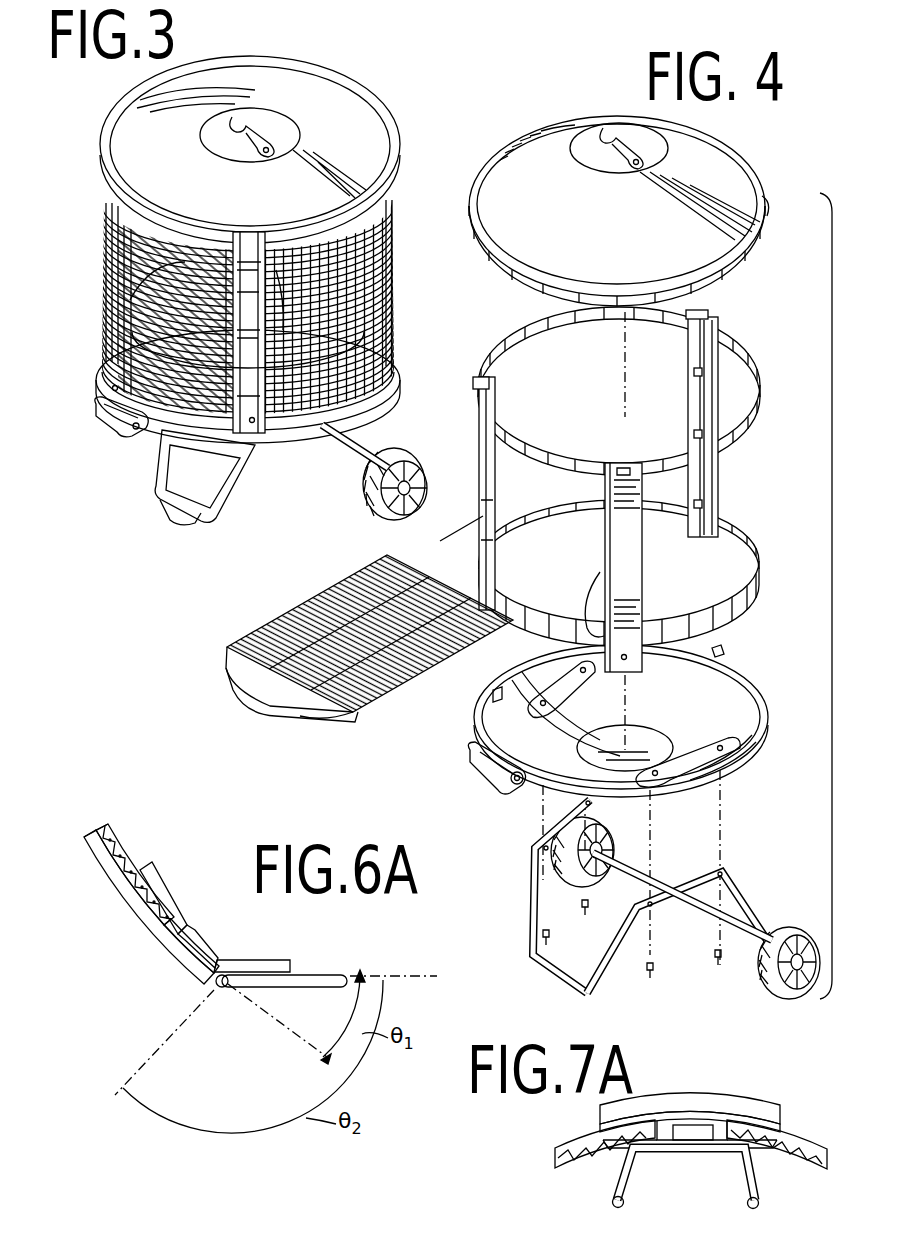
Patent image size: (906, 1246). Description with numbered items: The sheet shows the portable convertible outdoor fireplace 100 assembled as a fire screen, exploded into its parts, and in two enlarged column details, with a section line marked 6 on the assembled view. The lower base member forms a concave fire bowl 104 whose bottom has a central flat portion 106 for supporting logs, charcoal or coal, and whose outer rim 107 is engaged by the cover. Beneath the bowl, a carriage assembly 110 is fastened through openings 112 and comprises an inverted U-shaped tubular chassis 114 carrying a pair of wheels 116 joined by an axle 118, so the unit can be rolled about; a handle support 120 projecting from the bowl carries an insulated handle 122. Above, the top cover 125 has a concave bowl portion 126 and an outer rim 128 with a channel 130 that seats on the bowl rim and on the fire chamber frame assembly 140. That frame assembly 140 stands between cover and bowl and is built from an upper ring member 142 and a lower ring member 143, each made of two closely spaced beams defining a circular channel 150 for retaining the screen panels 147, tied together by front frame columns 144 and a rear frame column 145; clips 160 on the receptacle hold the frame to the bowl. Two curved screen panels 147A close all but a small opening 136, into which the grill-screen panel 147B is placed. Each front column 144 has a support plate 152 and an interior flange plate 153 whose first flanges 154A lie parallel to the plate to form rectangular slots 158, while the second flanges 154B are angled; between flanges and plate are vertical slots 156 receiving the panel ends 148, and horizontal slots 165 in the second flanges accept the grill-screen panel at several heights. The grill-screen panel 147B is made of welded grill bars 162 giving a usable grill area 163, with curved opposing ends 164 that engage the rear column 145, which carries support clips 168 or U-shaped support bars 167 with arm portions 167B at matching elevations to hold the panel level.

In FIG. 4, the convertible fireplace 100 is at (806, 596).
In FIG. 3, the fire bowl 104 is at (98, 384).
In FIG. 4, the central flat portion 106 is at (630, 770).
In FIG. 4, the outer rim 107 is at (760, 706).
In FIG. 3, the carriage assembly 110 is at (381, 427).
In FIG. 4, the carriage assembly 110 is at (626, 896).
In FIG. 4, the openings 112 is at (730, 750).
In FIG. 4, the tubular chassis 114 is at (531, 946).
In FIG. 4, the wheels 116 is at (806, 940).
In FIG. 4, the axle 118 is at (732, 904).
In FIG. 4, the handle support 120 is at (506, 790).
In FIG. 3, the insulated handle 122 is at (84, 416).
In FIG. 4, the insulated handle 122 is at (466, 756).
In FIG. 3, the top cover 125 is at (183, 183).
In FIG. 4, the top cover 125 is at (560, 226).
In FIG. 4, the concave bowl portion 126 is at (486, 230).
In FIG. 4, the outer rim 128 is at (766, 210).
In FIG. 4, the channel 130 is at (742, 265).
In FIG. 3, the opening 136 is at (160, 452).
In FIG. 4, the fire chamber frame assembly 140 is at (530, 318).
In FIG. 4, the upper ring member 142 is at (748, 372).
In FIG. 6A, the upper ring member 142 is at (143, 951).
In FIG. 7A, the upper ring member 142 is at (719, 1102).
In FIG. 3, the lower ring member 143 is at (188, 388).
In FIG. 4, the lower ring member 143 is at (750, 536).
In FIG. 3, the front frame column 144 is at (76, 158).
In FIG. 4, the front frame column 144 is at (480, 452).
In FIG. 4, the rear frame column 145 is at (718, 488).
In FIG. 7A, the rear frame column 145 is at (688, 1120).
In FIG. 3, the screen panels 147 is at (392, 215).
In FIG. 7A, the screen panels 147 is at (567, 1152).
In FIG. 6A, the screen panels 147A is at (112, 834).
In FIG. 3, the grill-screen panel 147B is at (116, 334).
In FIG. 4, the grill-screen panel 147B is at (354, 716).
In FIG. 6A, the grill-screen panel 147B is at (321, 974).
In FIG. 6A, the ends of screen panels 148 is at (160, 927).
In FIG. 4, the circular channel 150 is at (752, 574).
In FIG. 6A, the support plate 152 is at (184, 964).
In FIG. 7A, the support plate 152 is at (768, 1120).
In FIG. 6A, the interior flange plate 153 is at (202, 947).
In FIG. 7A, the interior flange plate 153 is at (613, 1137).
In FIG. 6A, the first flanges 154A is at (163, 890).
In FIG. 6A, the second flanges 154B is at (259, 958).
In FIG. 3, the vertical slots 156 is at (276, 385).
In FIG. 4, the vertical slots 156 is at (636, 560).
In FIG. 4, the rectangular slots 158 is at (706, 310).
In FIG. 4, the clips 160 is at (724, 652).
In FIG. 4, the grill bars 162 is at (344, 618).
In FIG. 4, the grill area 163 is at (312, 602).
In FIG. 4, the opposing ends 164 is at (398, 552).
In FIG. 4, the horizontal slots 165 is at (596, 574).
In FIG. 7A, the support bars 167 is at (686, 1156).
In FIG. 7A, the arm portions 167B is at (614, 1207).
In FIG. 4, the support clips 168 is at (694, 372).
In FIG. 3, the section line 6- 6 is at (63, 300).